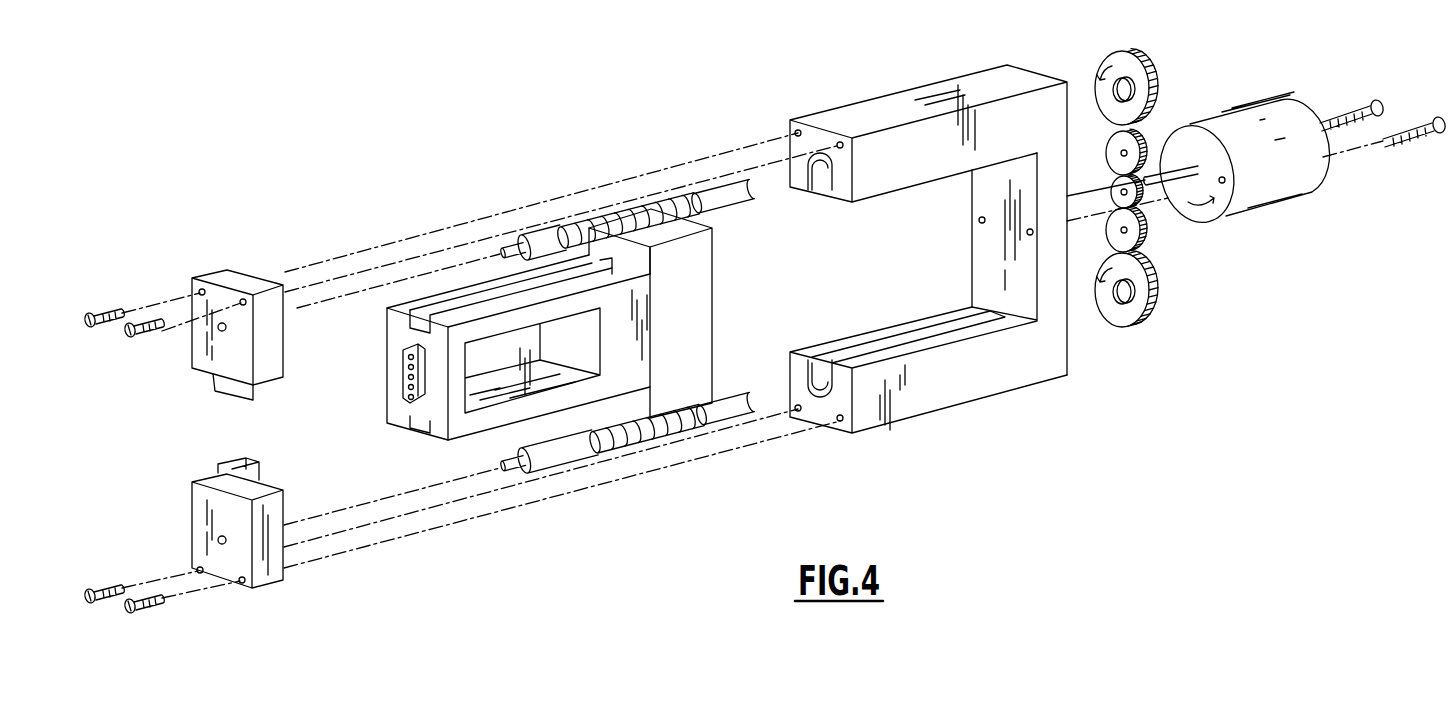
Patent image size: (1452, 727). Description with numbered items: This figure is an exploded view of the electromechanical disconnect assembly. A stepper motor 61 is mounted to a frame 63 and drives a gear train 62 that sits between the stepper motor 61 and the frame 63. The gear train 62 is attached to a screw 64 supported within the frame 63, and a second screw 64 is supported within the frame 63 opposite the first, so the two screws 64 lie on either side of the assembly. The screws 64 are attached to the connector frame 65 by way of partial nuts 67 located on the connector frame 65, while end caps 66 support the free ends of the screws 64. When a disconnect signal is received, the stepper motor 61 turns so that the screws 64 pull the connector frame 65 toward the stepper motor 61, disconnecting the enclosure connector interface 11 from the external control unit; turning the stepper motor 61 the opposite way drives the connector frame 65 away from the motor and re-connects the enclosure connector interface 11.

The enclosure connector interface 11 is at (403, 363).
The stepper motor 61 is at (1257, 200).
The gear train 62 is at (1175, 318).
The frame 63 is at (1000, 390).
The screw 64 is at (628, 331).
The connector frame 65 is at (556, 346).
The end cap 66 is at (217, 277).
The partial nut 67 is at (675, 210).